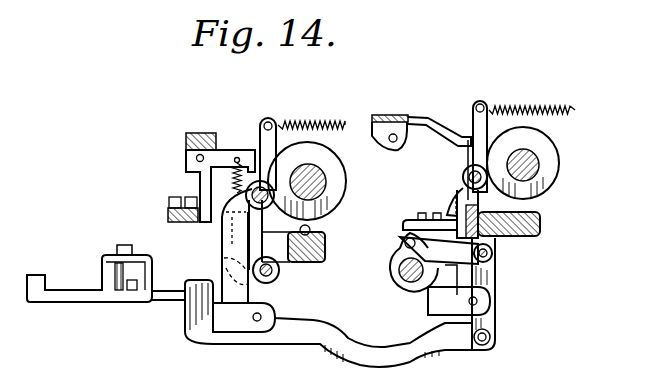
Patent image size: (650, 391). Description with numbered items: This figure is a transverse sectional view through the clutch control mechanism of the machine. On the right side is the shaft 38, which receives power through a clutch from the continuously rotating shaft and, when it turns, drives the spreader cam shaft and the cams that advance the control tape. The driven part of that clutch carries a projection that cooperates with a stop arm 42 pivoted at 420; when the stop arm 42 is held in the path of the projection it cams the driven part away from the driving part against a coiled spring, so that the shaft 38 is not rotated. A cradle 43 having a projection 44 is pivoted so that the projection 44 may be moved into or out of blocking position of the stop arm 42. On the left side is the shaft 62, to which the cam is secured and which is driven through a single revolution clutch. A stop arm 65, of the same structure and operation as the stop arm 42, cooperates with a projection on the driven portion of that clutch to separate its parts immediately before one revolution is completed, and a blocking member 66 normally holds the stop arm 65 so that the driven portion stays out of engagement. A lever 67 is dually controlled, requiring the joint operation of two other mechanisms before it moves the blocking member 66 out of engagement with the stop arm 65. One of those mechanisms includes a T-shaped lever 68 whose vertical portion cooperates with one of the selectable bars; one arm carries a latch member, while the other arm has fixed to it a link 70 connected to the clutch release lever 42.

The shaft 38 is at (545, 165).
The stop arm 42 is at (468, 155).
The cradle 43 is at (383, 115).
The projection 44 is at (435, 124).
The shaft 62 is at (320, 187).
The stop arm 65 is at (245, 240).
The blocking member 66 is at (226, 153).
The lever 67 is at (174, 226).
The T-shaped lever 68 is at (55, 307).
The link 70 is at (190, 326).
The pivot 420 is at (500, 262).